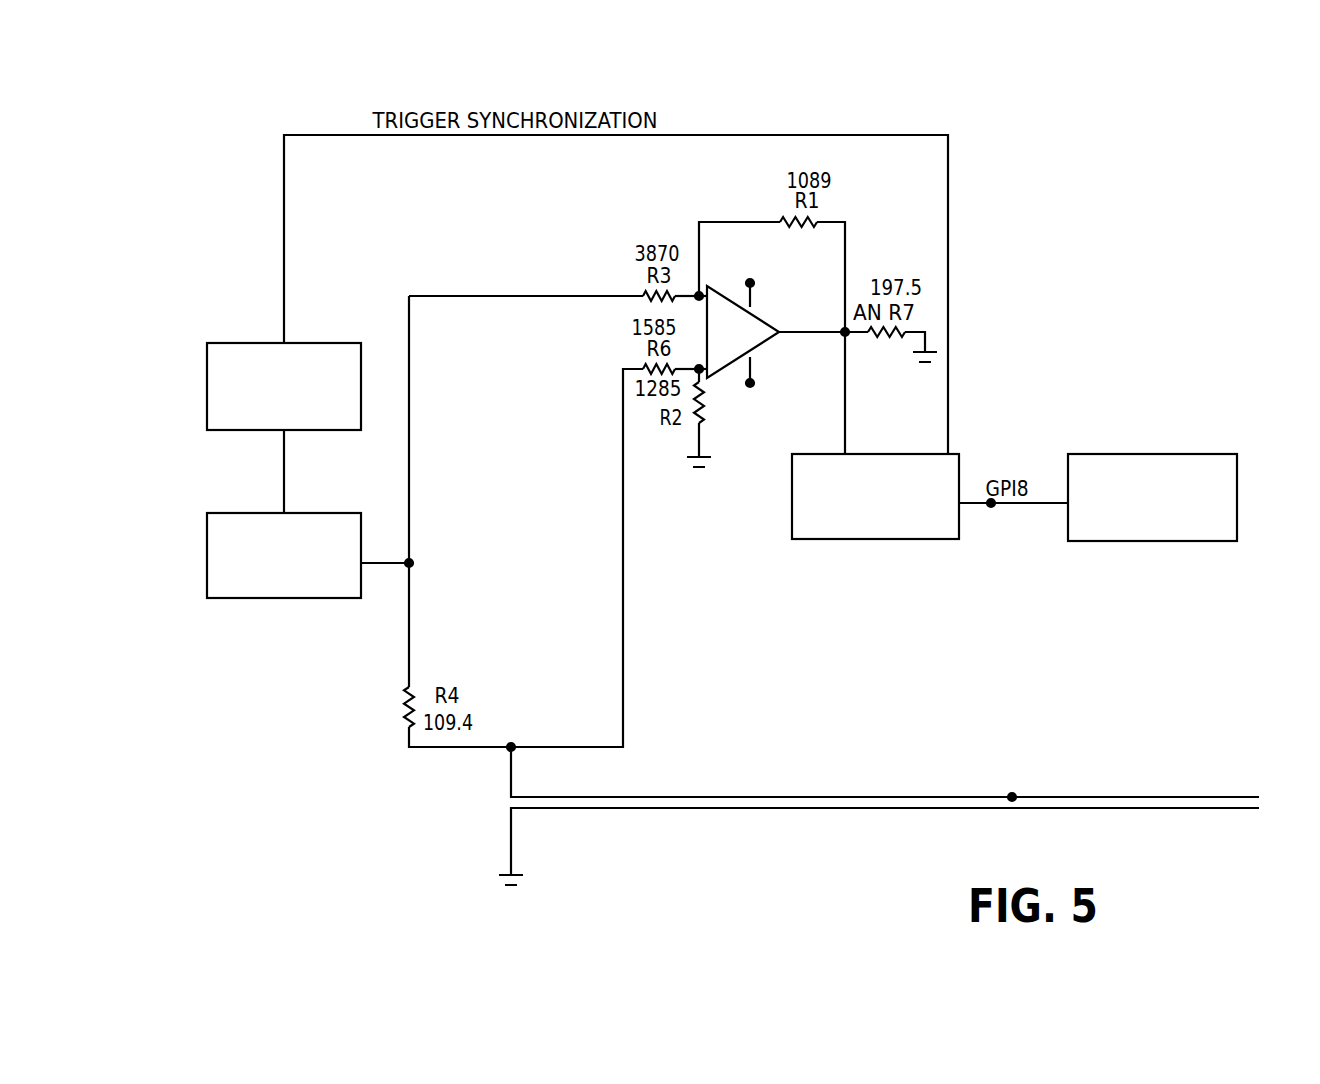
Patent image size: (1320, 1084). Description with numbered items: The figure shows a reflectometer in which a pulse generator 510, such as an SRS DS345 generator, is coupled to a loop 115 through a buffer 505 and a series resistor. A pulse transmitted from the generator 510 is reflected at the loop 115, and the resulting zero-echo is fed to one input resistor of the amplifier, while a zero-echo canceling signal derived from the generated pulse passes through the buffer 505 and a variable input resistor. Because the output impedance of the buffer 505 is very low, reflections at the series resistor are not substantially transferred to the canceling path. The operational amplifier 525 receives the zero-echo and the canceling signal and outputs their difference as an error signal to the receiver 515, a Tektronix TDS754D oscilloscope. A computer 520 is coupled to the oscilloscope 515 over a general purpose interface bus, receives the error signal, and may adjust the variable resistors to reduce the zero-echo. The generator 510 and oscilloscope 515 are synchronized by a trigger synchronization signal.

The pulse generator 510 is at (207, 367).
The buffer 505 is at (207, 532).
The receiver 515 is at (827, 539).
The computer 520 is at (1117, 454).
The operational amplifier 525 is at (718, 288).
The loop 115 is at (842, 809).